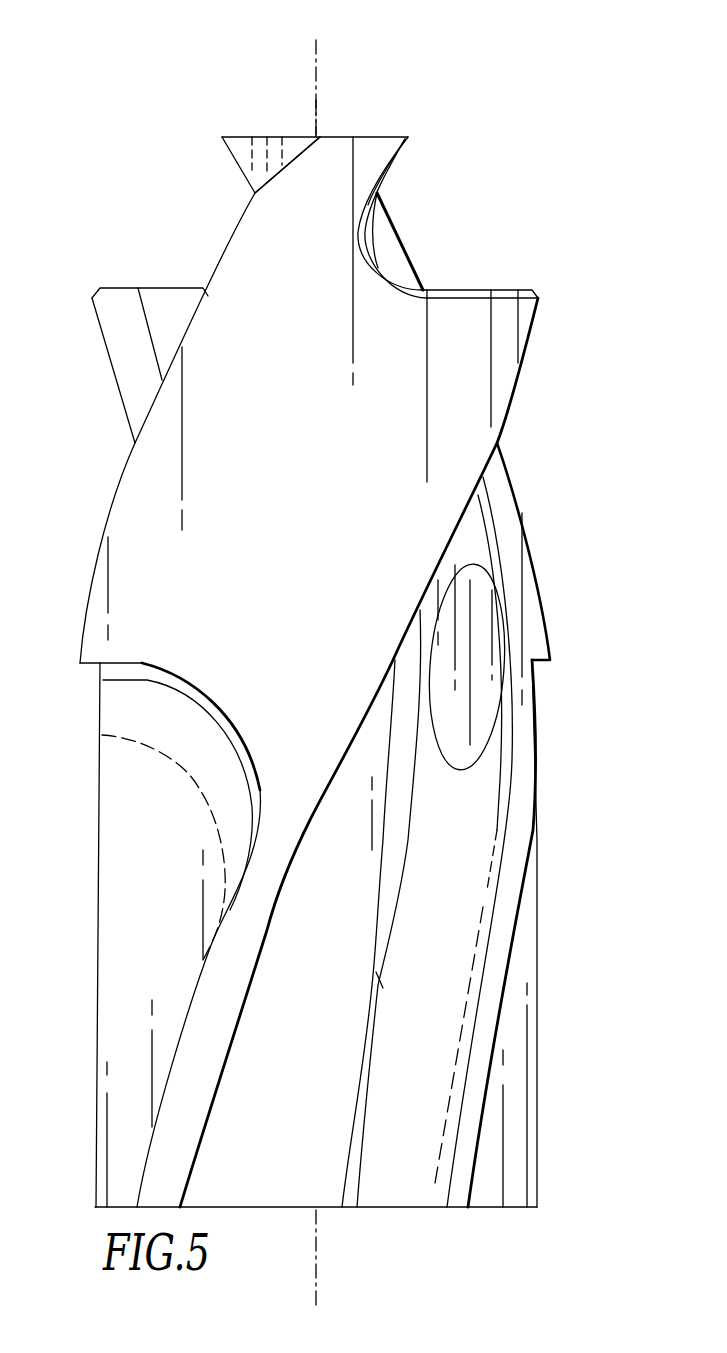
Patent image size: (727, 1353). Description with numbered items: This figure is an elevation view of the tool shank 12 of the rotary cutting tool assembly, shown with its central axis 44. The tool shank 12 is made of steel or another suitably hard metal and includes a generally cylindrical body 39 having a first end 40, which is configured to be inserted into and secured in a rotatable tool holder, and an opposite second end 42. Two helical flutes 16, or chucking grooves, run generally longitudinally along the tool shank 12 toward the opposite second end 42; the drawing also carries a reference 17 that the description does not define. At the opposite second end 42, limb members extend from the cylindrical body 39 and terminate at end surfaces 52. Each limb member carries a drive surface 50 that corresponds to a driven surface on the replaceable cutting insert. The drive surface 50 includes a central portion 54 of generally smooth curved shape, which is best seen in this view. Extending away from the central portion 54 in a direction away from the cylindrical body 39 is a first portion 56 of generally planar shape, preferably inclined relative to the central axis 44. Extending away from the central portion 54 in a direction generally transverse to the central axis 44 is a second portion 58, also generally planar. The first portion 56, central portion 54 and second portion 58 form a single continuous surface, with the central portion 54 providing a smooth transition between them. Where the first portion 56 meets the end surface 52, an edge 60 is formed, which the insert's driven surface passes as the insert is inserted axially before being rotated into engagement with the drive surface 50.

The tool shank 12 is at (562, 163).
The helical flutes 16 is at (478, 886).
The margin surface 17 is at (455, 745).
The cylindrical body 39 is at (140, 535).
The first end 40 is at (308, 1213).
The opposite second end 42 is at (322, 105).
The central axis 44 is at (315, 57).
The drive surface 50 is at (425, 213).
The end surfaces 52 is at (258, 137).
The central portion 54 is at (378, 263).
The first portion 56 is at (402, 163).
The second portion 58 is at (502, 290).
The edge 60 is at (405, 137).